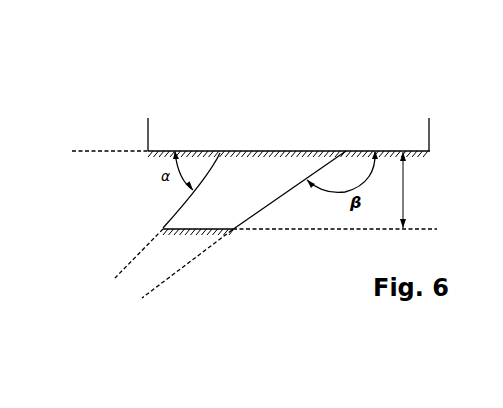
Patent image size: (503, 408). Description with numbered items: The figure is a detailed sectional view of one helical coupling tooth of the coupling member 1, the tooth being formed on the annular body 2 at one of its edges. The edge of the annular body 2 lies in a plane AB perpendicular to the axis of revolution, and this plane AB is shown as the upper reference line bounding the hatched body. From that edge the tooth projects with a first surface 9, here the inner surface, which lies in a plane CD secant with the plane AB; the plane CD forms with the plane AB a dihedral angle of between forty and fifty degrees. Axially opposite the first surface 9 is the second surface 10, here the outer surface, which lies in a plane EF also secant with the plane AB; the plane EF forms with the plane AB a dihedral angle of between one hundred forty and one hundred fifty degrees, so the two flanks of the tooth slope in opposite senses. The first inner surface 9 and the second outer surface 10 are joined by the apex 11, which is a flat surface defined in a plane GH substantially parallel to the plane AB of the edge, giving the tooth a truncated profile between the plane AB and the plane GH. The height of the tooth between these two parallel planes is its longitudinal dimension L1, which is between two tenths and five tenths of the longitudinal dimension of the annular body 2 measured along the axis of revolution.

The coupling member 1 is at (260, 82).
The annular body 2 is at (175, 135).
The first surface 9 is at (177, 207).
The second surface 10 is at (284, 194).
The apex 11 is at (193, 232).
The plane AB is at (105, 156).
The plane CD is at (131, 256).
The plane EF is at (209, 257).
The plane GH is at (265, 234).
The longitudinal dimension L1 is at (414, 190).